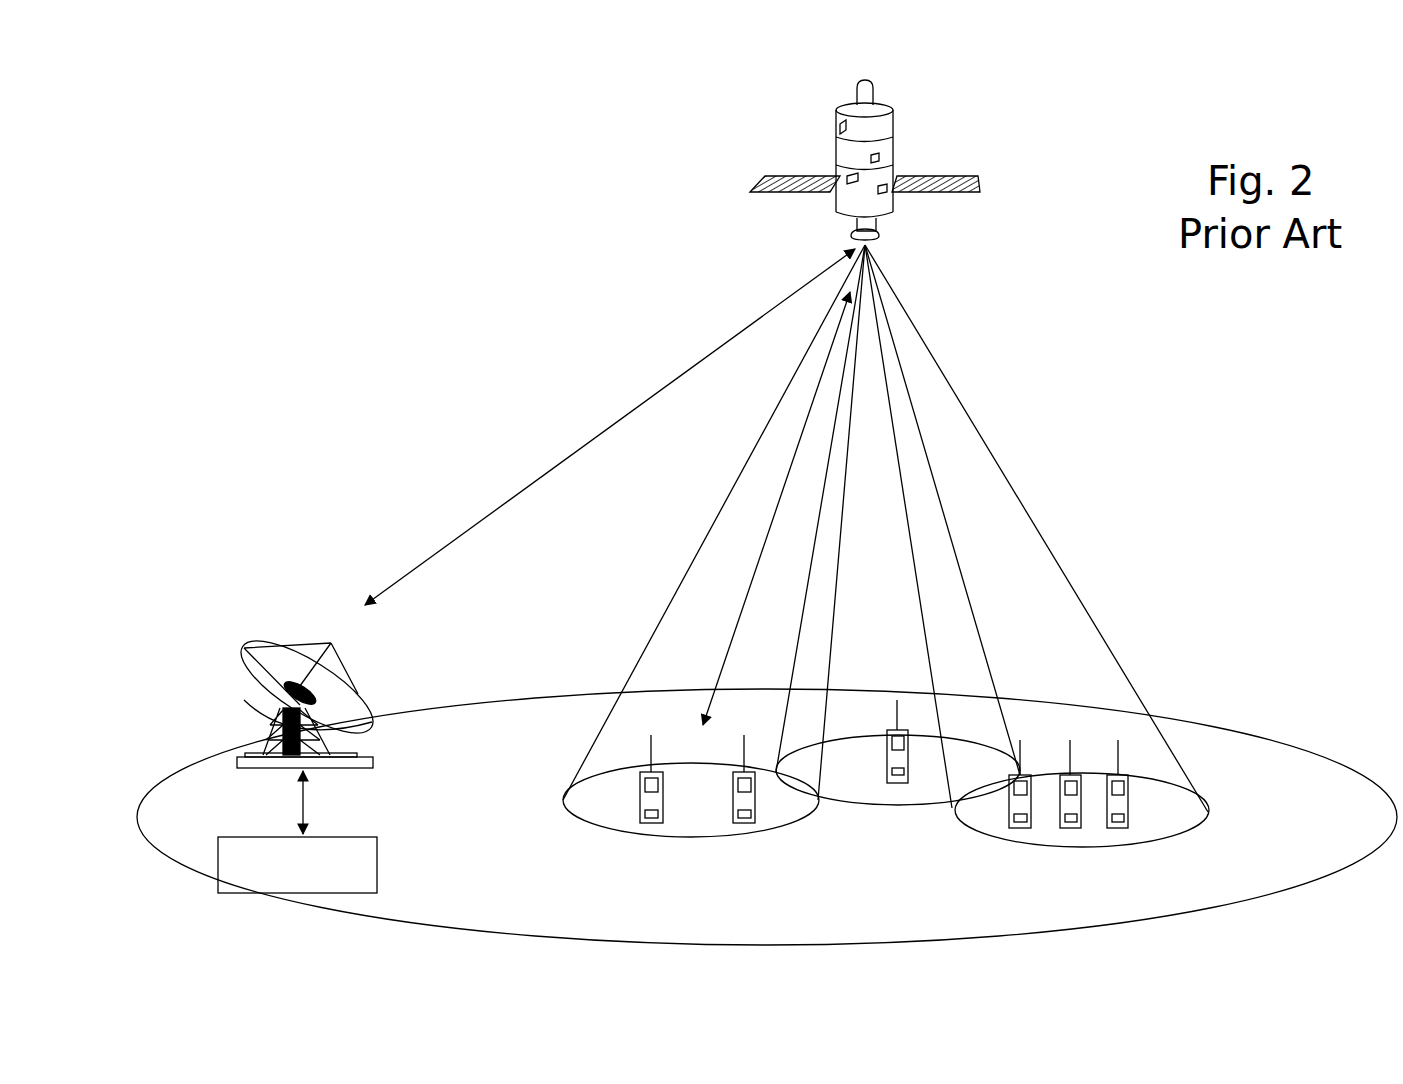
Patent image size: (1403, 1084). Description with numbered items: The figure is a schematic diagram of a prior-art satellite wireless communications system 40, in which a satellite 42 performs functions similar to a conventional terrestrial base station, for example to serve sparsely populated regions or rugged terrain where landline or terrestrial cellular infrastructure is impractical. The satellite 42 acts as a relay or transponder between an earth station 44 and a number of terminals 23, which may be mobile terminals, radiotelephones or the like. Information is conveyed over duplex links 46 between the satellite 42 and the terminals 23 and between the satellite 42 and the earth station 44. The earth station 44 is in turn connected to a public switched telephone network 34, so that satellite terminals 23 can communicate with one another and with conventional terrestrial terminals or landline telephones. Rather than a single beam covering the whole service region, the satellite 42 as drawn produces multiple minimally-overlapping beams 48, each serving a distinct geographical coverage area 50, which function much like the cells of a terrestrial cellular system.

The satellite wireless communications system 40 is at (565, 200).
The satellite 42 is at (1008, 161).
The earth station 44 is at (258, 770).
The duplex links 46 is at (548, 430).
The minimally-overlapping beams 48 is at (705, 487).
The coverage areas 50 is at (700, 838).
The terminals 23 is at (640, 797).
The public switched telephone network 34 is at (380, 865).